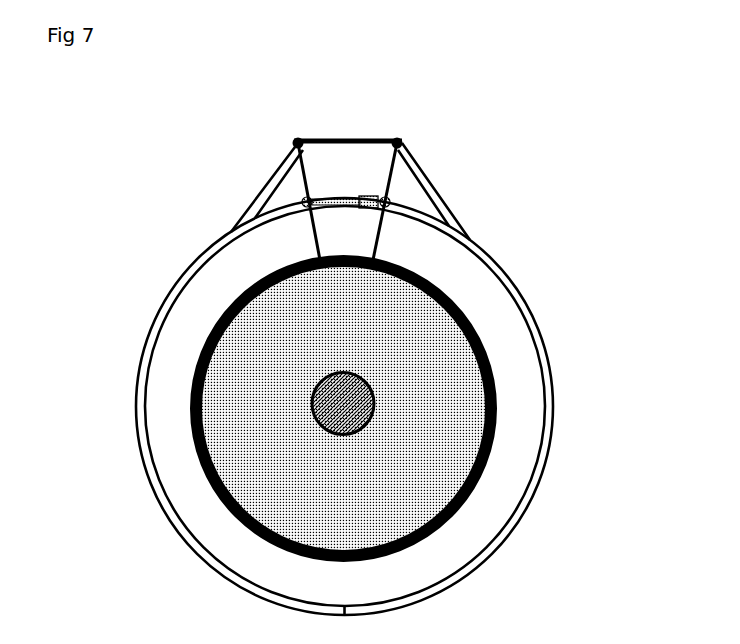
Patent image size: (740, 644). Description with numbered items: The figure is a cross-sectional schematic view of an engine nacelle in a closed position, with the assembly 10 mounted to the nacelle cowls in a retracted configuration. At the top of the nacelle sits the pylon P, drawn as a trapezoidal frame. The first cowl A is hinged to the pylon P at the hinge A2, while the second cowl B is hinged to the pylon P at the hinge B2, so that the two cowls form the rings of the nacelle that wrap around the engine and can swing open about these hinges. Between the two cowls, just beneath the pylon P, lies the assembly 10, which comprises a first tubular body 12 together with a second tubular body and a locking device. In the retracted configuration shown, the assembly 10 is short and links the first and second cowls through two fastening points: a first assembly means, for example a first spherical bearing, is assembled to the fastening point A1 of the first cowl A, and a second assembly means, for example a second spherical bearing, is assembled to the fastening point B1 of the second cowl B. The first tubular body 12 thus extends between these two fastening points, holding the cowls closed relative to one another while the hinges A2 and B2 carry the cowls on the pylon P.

The first cowl A is at (552, 382).
The second cowl B is at (190, 268).
The pylon P is at (340, 139).
The assembly 10 is at (368, 196).
The first tubular body 12 is at (338, 197).
The fastening point of first cowl A1 is at (385, 208).
The hinge of first cowl A2 is at (403, 145).
The fastening point of second cowl B1 is at (307, 208).
The hinge of second cowl B2 is at (295, 144).